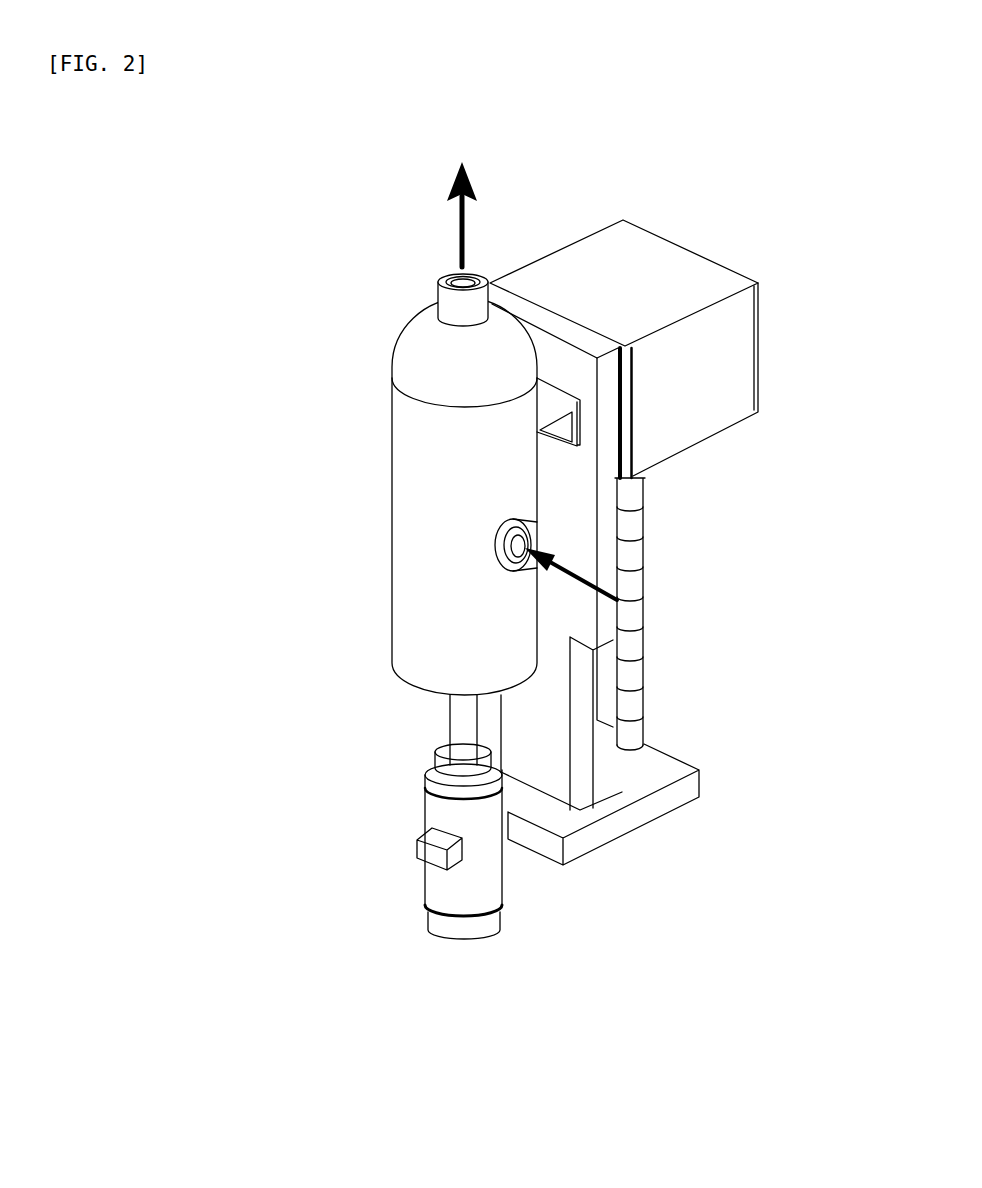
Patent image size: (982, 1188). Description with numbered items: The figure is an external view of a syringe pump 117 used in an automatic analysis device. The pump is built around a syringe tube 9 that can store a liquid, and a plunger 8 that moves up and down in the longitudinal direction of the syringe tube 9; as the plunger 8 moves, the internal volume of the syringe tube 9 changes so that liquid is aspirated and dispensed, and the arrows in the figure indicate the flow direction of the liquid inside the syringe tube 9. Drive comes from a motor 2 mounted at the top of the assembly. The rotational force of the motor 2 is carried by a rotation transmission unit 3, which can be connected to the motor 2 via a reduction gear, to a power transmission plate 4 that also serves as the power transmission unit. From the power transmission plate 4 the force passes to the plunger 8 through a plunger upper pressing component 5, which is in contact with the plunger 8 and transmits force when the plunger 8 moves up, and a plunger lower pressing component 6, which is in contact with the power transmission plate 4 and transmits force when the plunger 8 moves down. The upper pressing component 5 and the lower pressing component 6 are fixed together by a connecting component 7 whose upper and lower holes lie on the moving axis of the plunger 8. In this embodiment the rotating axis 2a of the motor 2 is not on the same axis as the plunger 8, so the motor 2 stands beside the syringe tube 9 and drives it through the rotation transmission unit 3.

The motor 2 is at (712, 357).
The rotating axis of the motor 2a is at (635, 447).
The rotation transmission unit 3 is at (632, 558).
The power transmission plate 4 is at (623, 767).
The plunger upper pressing component 5 is at (455, 765).
The plunger lower pressing component 6 is at (453, 928).
The connecting component 7 is at (488, 883).
The plunger 8 is at (453, 710).
The syringe tube 9 is at (418, 537).
The syringe pump 117 is at (235, 146).